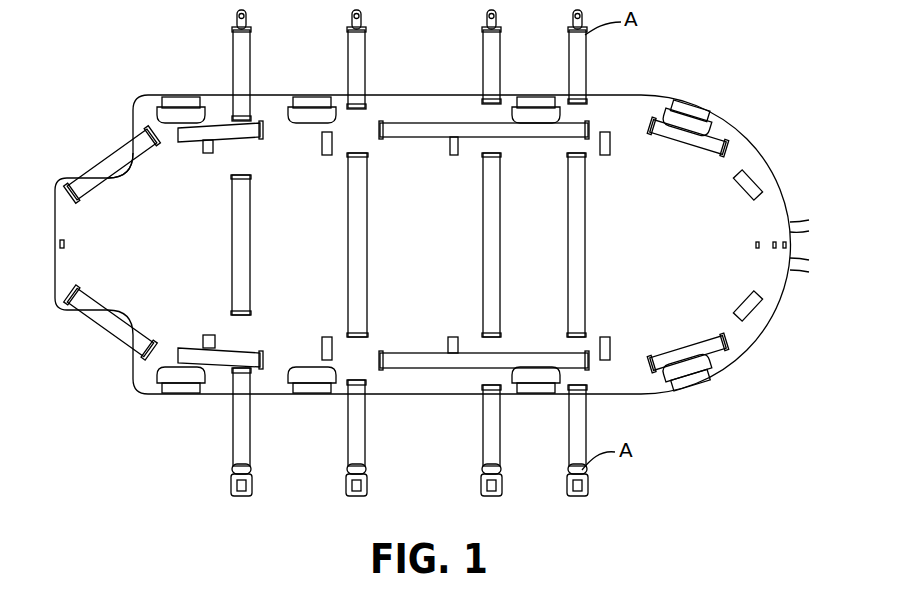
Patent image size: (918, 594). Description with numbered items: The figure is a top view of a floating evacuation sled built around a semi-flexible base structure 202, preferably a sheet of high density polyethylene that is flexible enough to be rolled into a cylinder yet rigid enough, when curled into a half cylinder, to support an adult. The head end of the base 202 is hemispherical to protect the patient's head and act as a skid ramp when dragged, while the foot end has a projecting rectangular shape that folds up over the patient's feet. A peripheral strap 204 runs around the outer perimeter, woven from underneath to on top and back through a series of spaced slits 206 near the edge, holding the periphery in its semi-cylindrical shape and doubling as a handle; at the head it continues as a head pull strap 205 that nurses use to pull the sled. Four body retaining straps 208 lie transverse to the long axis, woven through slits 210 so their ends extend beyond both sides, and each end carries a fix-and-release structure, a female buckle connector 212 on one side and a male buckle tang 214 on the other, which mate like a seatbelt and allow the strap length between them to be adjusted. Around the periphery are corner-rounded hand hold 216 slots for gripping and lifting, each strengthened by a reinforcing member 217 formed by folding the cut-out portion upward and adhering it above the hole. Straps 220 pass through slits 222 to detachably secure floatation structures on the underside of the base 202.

The base structure 202 is at (742, 156).
The peripheral strap 204 is at (115, 160).
The head pull strap 205 is at (801, 228).
The slits 206 is at (145, 128).
The body retaining straps 208 is at (358, 243).
The slits 210 is at (566, 388).
The female buckle connector 212 is at (592, 486).
The male buckle tang 214 is at (498, 26).
The hand hold 216 is at (181, 112).
The reinforcing member 217 is at (320, 99).
The straps 220 is at (324, 150).
The slits 222 is at (606, 130).